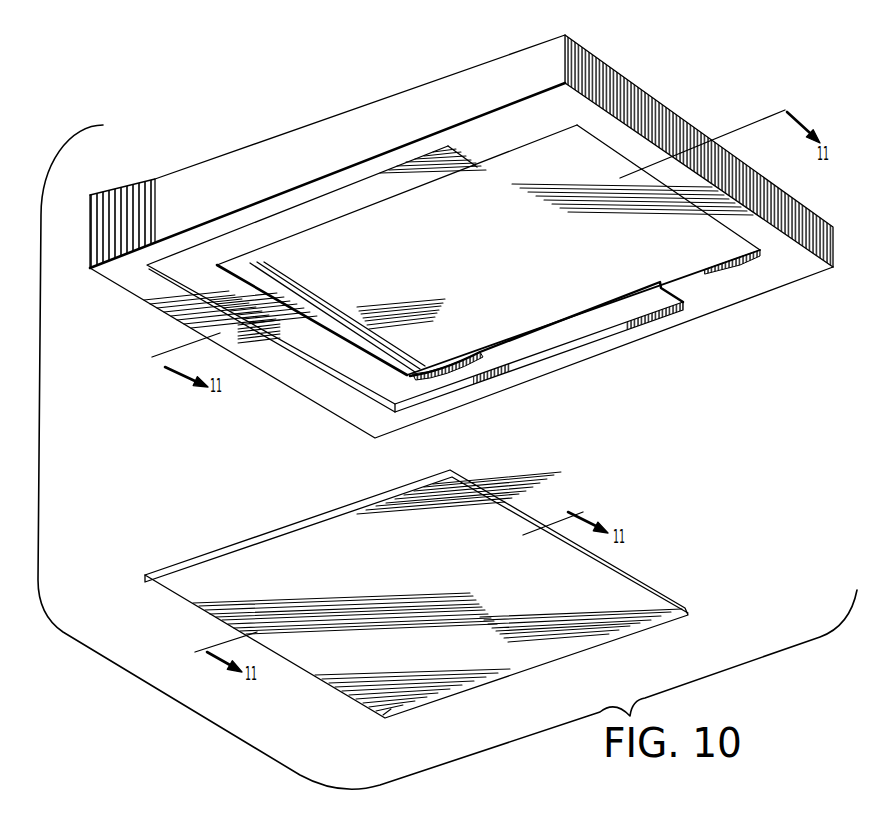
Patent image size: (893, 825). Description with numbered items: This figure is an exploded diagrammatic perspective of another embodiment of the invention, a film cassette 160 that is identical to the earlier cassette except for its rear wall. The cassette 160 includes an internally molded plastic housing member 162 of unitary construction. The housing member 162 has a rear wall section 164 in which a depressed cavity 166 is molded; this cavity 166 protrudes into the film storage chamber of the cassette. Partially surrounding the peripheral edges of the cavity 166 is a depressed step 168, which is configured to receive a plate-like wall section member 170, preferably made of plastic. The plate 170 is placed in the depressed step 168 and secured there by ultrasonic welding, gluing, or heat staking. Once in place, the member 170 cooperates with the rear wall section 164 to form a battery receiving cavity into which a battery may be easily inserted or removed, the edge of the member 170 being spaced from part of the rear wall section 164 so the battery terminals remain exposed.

The film cassette 160 is at (772, 86).
The housing member 162 is at (727, 172).
The rear wall section 164 is at (743, 294).
The depressed cavity 166 is at (424, 378).
The depressed step 168 is at (425, 398).
The plate-like wall section member 170 is at (657, 594).